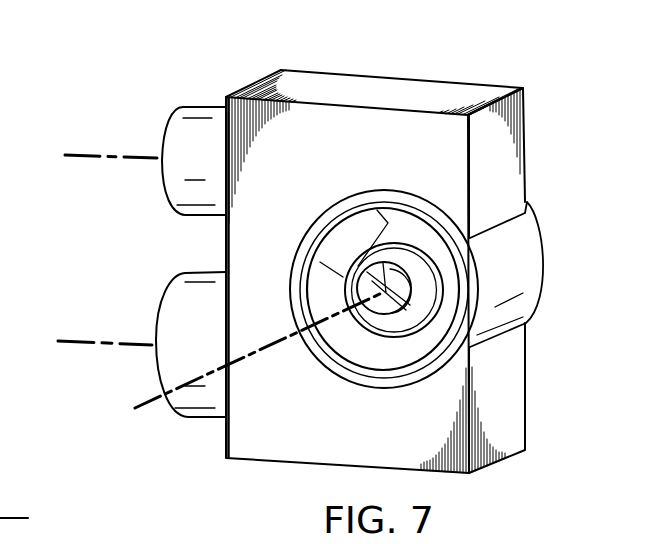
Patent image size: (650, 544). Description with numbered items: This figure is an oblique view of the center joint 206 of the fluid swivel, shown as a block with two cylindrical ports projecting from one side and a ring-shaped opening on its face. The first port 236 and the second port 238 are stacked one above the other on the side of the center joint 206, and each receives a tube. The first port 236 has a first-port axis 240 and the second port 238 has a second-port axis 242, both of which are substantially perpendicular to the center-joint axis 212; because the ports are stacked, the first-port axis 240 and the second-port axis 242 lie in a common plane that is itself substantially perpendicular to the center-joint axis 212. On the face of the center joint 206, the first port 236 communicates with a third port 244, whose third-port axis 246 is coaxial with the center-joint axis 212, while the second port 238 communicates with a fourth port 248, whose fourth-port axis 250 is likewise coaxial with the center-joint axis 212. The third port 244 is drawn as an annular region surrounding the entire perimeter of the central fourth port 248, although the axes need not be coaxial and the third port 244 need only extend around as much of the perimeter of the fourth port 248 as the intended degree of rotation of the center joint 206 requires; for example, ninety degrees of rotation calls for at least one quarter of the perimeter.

The center joint 206 is at (388, 87).
The first port 236 is at (202, 106).
The second port 238 is at (197, 271).
The first-port axis 240 is at (85, 152).
The second-port axis 242 is at (80, 338).
The third port 244 is at (403, 353).
The fourth port 248 is at (377, 310).
The center-joint axis 212 is at (223, 385).
The third-port axis 246 is at (223, 385).
The fourth-port axis 250 is at (143, 407).